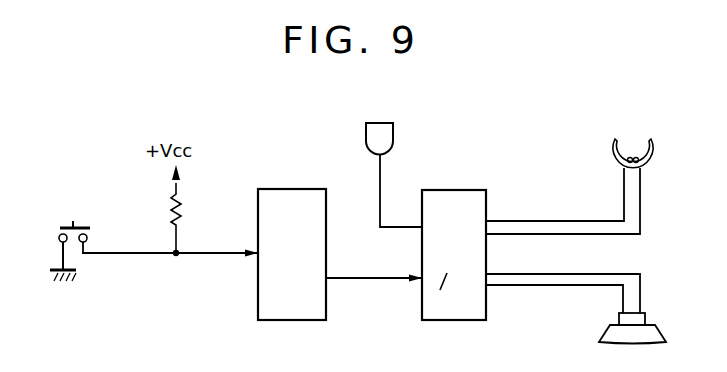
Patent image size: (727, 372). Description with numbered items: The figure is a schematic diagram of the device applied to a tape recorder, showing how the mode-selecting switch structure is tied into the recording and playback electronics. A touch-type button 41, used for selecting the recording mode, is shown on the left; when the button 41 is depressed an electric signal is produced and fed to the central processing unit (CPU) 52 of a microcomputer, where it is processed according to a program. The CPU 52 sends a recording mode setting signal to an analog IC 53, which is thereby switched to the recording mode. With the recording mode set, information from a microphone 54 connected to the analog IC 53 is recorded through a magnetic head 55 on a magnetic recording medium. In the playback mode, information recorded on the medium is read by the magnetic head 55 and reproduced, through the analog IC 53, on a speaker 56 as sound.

The touch-type button 41 is at (84, 226).
The central processing unit (CPU) 52 is at (287, 197).
The analog IC 53 is at (462, 200).
The microphone 54 is at (382, 130).
The magnetic head 55 is at (618, 159).
The speaker 56 is at (615, 333).